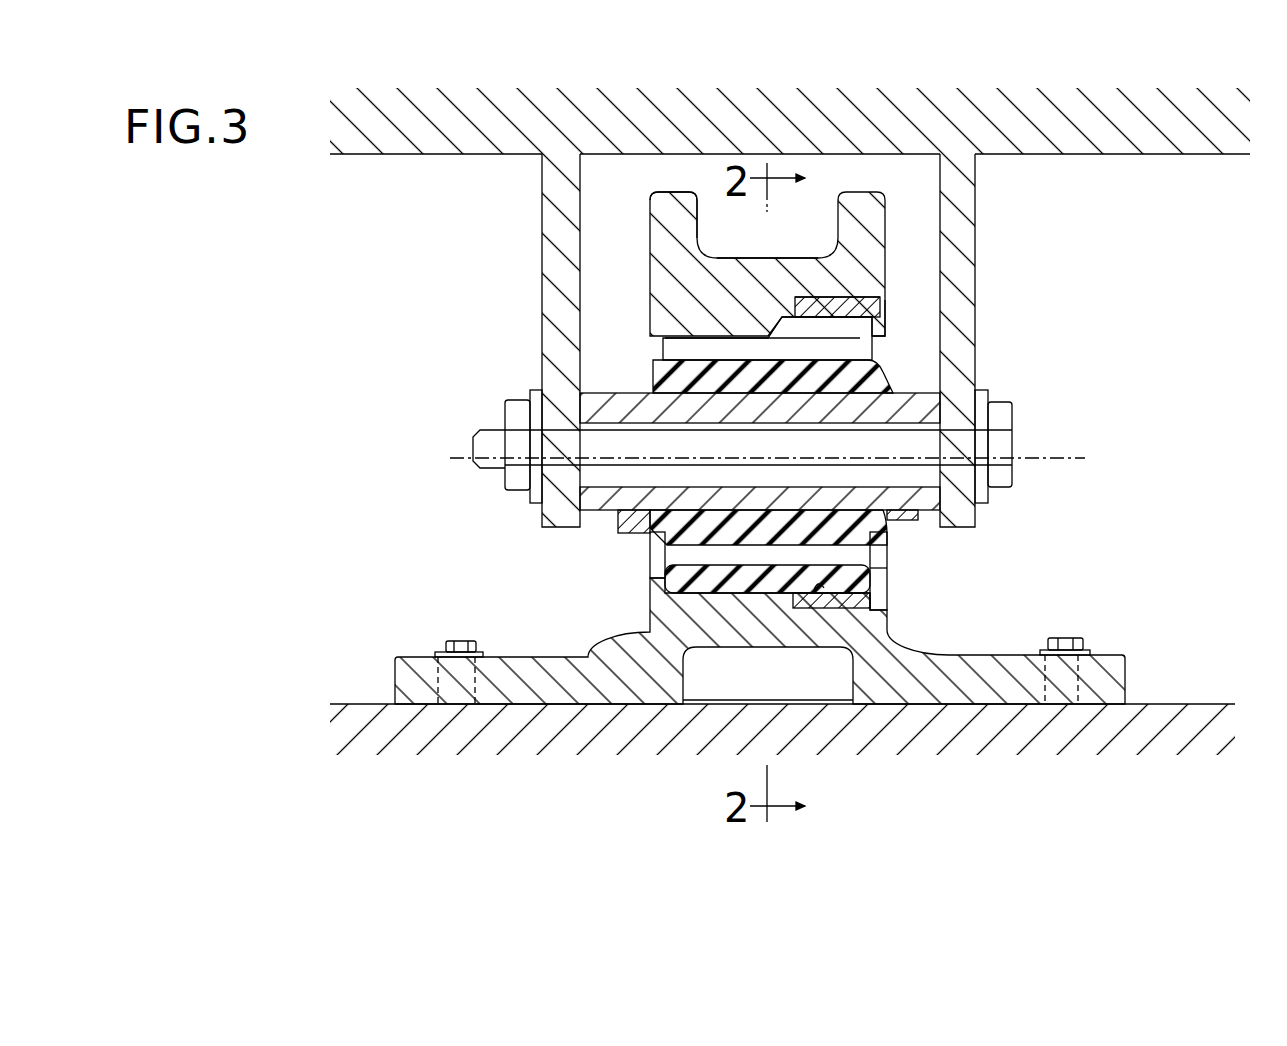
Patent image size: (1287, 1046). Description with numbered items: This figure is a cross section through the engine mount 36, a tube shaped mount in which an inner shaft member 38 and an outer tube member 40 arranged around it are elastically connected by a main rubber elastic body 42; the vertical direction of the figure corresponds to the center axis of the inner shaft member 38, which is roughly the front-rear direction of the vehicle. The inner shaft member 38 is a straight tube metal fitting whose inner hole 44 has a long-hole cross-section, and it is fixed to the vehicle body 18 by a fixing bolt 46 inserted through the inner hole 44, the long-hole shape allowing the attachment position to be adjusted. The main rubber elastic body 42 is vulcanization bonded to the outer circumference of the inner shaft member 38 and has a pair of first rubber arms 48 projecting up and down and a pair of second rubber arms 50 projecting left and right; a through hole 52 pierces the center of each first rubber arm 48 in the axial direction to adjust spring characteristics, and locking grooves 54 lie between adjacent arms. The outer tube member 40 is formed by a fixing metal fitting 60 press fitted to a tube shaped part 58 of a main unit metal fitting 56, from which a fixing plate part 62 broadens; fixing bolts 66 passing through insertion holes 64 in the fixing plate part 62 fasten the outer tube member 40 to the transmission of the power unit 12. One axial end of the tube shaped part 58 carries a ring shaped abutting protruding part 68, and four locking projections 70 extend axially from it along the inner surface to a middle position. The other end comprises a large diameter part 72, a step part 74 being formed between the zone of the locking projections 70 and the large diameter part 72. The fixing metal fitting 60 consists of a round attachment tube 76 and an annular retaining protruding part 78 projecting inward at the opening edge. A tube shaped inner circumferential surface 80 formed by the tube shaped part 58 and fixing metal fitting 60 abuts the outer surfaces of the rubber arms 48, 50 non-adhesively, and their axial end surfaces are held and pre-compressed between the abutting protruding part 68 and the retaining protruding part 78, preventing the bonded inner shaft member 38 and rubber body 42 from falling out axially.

The power unit 12 is at (373, 712).
The vehicle body 18 is at (425, 148).
The engine mount 36 is at (582, 556).
The inner shaft member 38 is at (602, 408).
The outer tube member 40 is at (887, 237).
The main rubber elastic body 42 is at (900, 382).
The inner hole 44 is at (607, 430).
The fixing bolt 46 is at (1005, 448).
The first rubber arms 48 is at (713, 582).
The second rubber arms 50 is at (690, 347).
The through hole 52 is at (727, 556).
The locking grooves 54 is at (827, 360).
The main unit metal fitting 56 is at (670, 260).
The tube shaped part 58 is at (745, 261).
The fixing metal fitting 60 is at (887, 322).
The fixing plate part 62 is at (607, 688).
The insertion holes 64 is at (443, 690).
The fixing bolts 66 is at (458, 641).
The abutting protruding part 68 is at (658, 578).
The locking projections 70 is at (742, 362).
The large diameter part 72 is at (843, 600).
The step part 74 is at (813, 296).
The attachment tube 76 is at (837, 302).
The retaining protruding part 78 is at (886, 573).
The tube shaped inner circumferential surface 80 is at (818, 588).